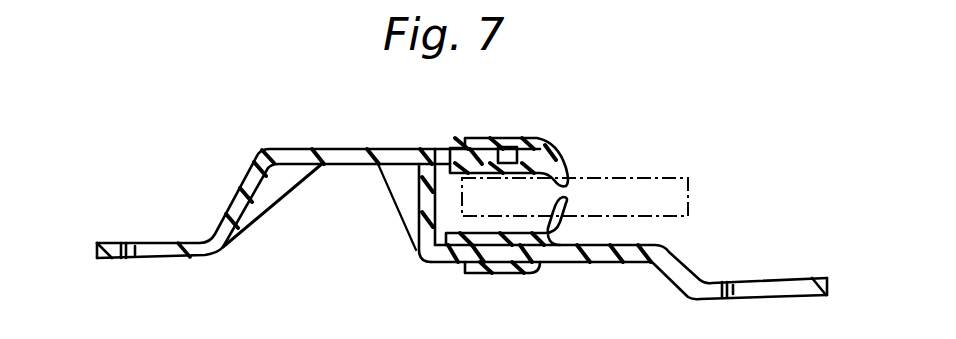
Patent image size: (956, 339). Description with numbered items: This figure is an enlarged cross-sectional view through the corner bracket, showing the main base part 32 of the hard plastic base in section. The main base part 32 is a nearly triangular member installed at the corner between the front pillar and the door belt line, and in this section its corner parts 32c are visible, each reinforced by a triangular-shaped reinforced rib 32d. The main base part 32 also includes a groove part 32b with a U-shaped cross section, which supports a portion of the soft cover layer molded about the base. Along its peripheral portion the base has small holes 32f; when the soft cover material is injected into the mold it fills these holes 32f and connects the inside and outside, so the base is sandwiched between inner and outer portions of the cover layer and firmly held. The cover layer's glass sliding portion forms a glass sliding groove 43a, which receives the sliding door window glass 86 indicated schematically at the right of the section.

The main base part 32 is at (462, 214).
The groove part 32b is at (447, 173).
The corner parts 32c is at (292, 168).
The reinforced ribs 32d is at (397, 195).
The small holes 32f is at (510, 250).
The glass sliding groove 43a is at (445, 246).
The door window glass 86 is at (646, 182).